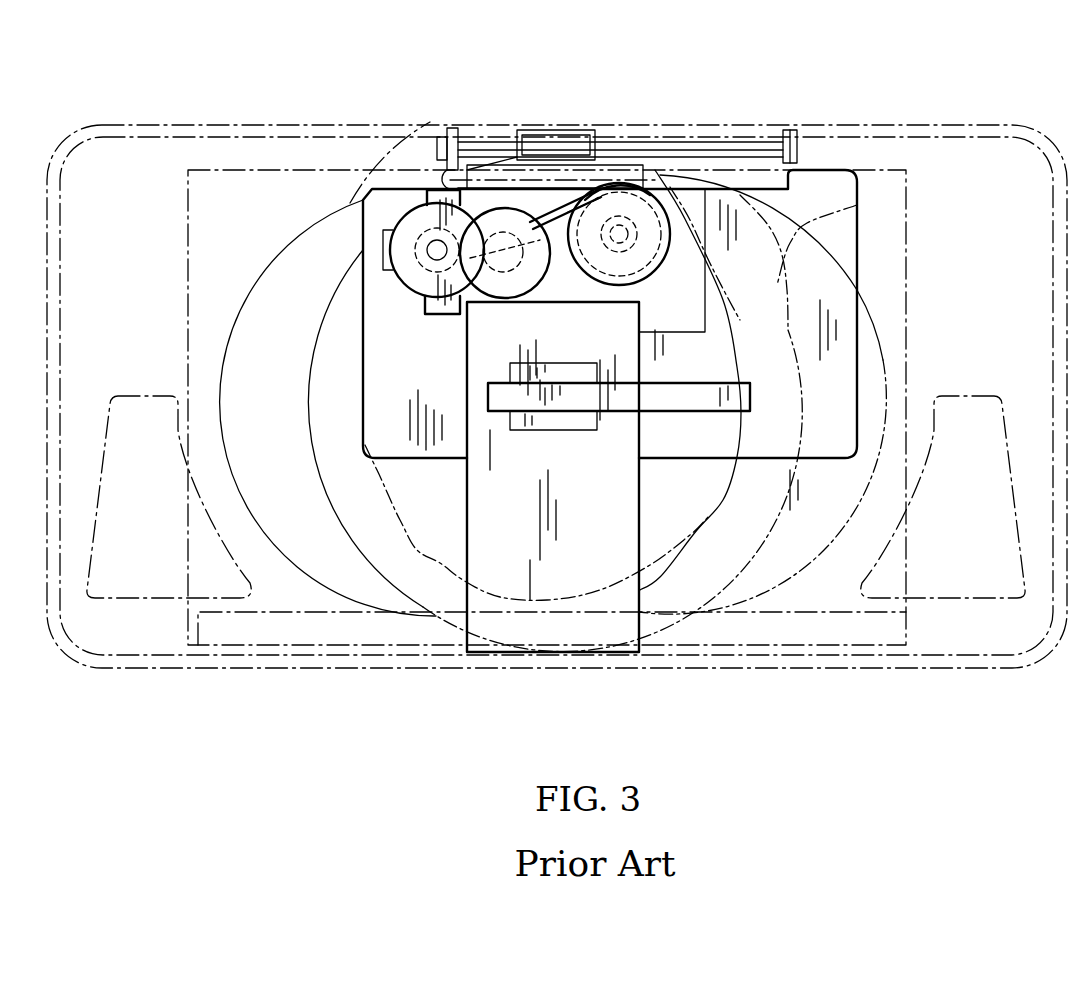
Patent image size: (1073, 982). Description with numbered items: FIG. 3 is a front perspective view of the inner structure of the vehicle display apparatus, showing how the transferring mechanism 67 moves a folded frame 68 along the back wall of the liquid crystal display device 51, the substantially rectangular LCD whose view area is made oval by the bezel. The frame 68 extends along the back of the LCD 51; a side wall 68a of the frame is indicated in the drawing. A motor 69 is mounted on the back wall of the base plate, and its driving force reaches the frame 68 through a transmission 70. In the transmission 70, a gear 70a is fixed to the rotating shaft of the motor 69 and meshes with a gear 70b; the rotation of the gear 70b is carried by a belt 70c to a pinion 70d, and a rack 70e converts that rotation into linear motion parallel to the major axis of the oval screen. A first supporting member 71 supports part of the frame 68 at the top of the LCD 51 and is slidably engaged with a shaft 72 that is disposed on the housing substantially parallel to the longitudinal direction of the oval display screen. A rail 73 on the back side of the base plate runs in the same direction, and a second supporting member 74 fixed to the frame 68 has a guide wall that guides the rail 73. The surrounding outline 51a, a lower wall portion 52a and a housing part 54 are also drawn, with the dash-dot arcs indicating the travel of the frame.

The liquid crystal display (LCD) display device 51 is at (803, 603).
The cabinet inner wall 51a is at (760, 575).
The rotor outline 52a is at (312, 562).
The housing 54 is at (853, 207).
The transferring mechanism 67 is at (608, 118).
The folded frame 68 is at (648, 512).
The column side wall 68a is at (467, 522).
The motor 69 is at (407, 217).
The transmission 70 is at (513, 210).
The gear 70a is at (395, 190).
The gear 70b is at (483, 213).
The belt 70c is at (547, 207).
The pinion 70d is at (628, 185).
The rack 70e is at (652, 182).
The first supporting member 71 is at (568, 128).
The shaft 72 is at (588, 200).
The rail 73 is at (715, 386).
The second supporting member 74 is at (517, 372).